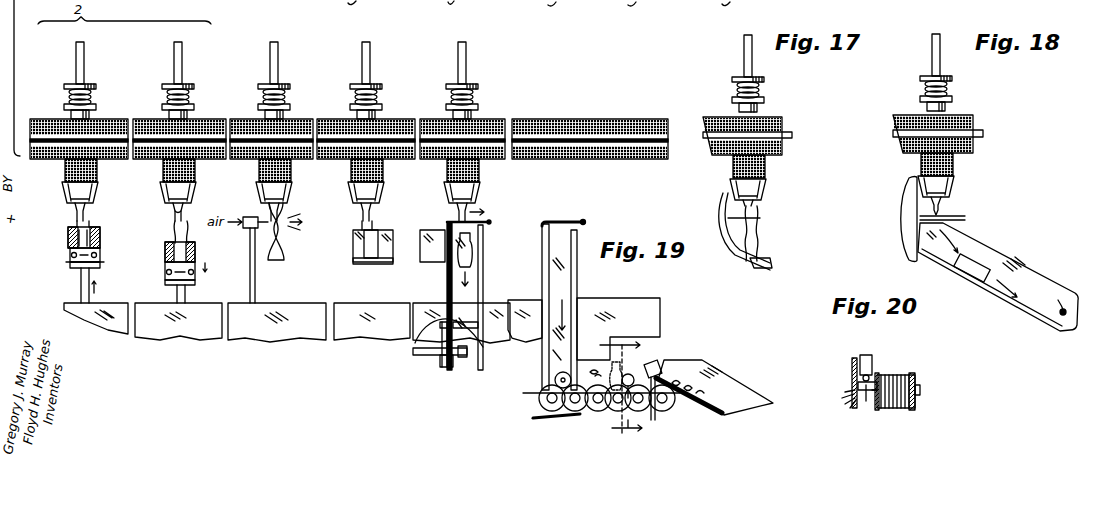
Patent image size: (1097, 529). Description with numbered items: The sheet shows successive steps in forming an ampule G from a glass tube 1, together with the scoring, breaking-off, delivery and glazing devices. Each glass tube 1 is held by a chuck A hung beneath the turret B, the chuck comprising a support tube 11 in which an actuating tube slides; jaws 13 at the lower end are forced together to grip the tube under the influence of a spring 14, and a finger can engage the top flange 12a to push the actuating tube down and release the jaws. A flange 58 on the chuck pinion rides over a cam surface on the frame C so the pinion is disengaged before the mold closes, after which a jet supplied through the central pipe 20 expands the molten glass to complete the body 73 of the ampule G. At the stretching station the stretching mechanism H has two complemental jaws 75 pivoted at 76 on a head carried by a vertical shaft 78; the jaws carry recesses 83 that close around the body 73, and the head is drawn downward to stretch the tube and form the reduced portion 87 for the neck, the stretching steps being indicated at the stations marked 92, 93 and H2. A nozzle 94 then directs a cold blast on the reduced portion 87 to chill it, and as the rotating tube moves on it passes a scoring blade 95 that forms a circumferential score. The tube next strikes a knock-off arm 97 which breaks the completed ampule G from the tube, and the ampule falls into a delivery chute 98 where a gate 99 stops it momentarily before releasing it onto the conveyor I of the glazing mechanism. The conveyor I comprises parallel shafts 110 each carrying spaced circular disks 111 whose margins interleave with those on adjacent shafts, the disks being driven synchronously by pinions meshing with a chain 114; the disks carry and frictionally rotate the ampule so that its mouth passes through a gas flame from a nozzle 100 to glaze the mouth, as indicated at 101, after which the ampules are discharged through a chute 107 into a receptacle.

In FIG. 16, the glass tube 1 is at (76, 68).
In FIG. 17, the glass tube 1 is at (738, 71).
In FIG. 18, the glass tube 1 is at (926, 71).
In FIG. 16, the top flange 12a is at (93, 86).
In FIG. 17, the top flange 12a is at (731, 80).
In FIG. 18, the top flange 12a is at (944, 79).
In FIG. 16, the spring 14 is at (92, 95).
In FIG. 17, the spring 14 is at (736, 98).
In FIG. 18, the spring 14 is at (952, 88).
In FIG. 16, the flange 58 is at (66, 106).
In FIG. 17, the flange 58 is at (767, 81).
In FIG. 18, the flange 58 is at (920, 98).
In FIG. 16, the turret B is at (62, 114).
In FIG. 17, the turret B is at (781, 116).
In FIG. 18, the turret B is at (901, 112).
In FIG. 16, the support tube 11 is at (66, 188).
In FIG. 17, the support tube 11 is at (770, 172).
In FIG. 18, the support tube 11 is at (964, 172).
In FIG. 16, the chuck A is at (104, 198).
In FIG. 17, the chuck A is at (777, 190).
In FIG. 18, the chuck A is at (966, 190).
In FIG. 16, the jaws 13 is at (90, 212).
In FIG. 17, the jaws 13 is at (764, 205).
In FIG. 18, the jaws 13 is at (946, 207).
In FIG. 16, the body 73 is at (72, 224).
In FIG. 17, the body 73 is at (758, 252).
In FIG. 18, the body 73 is at (989, 266).
In FIG. 20, the body 73 is at (905, 372).
In FIG. 16, the jaws 75 is at (70, 258).
In FIG. 16, the pivot 76 is at (74, 265).
In FIG. 16, the vertical shaft 78 is at (81, 288).
In FIG. 16, the recesses 83 is at (64, 238).
In FIG. 16, the reduced portion 87 is at (178, 222).
In FIG. 17, the reduced portion 87 is at (760, 218).
In FIG. 16, the second station 92 is at (108, 47).
In FIG. 16, the third station 93 is at (205, 47).
In FIG. 16, the nozzle 94 is at (248, 217).
In FIG. 16, the scoring blade 95 is at (382, 215).
In FIG. 17, the scoring blade 95 is at (721, 202).
In FIG. 16, the knock-off arm 97 is at (447, 222).
In FIG. 19, the knock-off arm 97 is at (584, 222).
In FIG. 18, the knock-off arm 97 is at (906, 216).
In FIG. 16, the delivery chute 98 is at (478, 286).
In FIG. 19, the delivery chute 98 is at (574, 293).
In FIG. 18, the delivery chute 98 is at (936, 264).
In FIG. 16, the gate 99 is at (429, 344).
In FIG. 18, the gate 99 is at (1066, 297).
In FIG. 19, the nozzle 100 is at (665, 360).
In FIG. 20, the nozzle 100 is at (848, 347).
In FIG. 19, the glazed mouth 101 is at (622, 342).
In FIG. 20, the glazed mouth 101 is at (850, 376).
In FIG. 19, the chute 107 is at (736, 390).
In FIG. 19, the shafts 110 is at (540, 394).
In FIG. 20, the shafts 110 is at (921, 391).
In FIG. 19, the circular disks 111 is at (536, 420).
In FIG. 20, the circular disks 111 is at (916, 380).
In FIG. 19, the chain 114 is at (582, 422).
In FIG. 19, the pipe 20 is at (614, 389).
In FIG. 16, the ampule G is at (107, 238).
In FIG. 19, the ampule G is at (644, 368).
In FIG. 17, the ampule G is at (765, 241).
In FIG. 18, the ampule G is at (978, 258).
In FIG. 20, the ampule G is at (892, 368).
In FIG. 16, the stretching mechanism H is at (100, 255).
In FIG. 16, the holder clamp H2 is at (172, 247).
In FIG. 16, the frame C is at (119, 342).
In FIG. 19, the frame C is at (660, 334).
In FIG. 17, the frame C is at (711, 223).
In FIG. 18, the frame C is at (895, 236).
In FIG. 19, the conveyor I is at (526, 411).